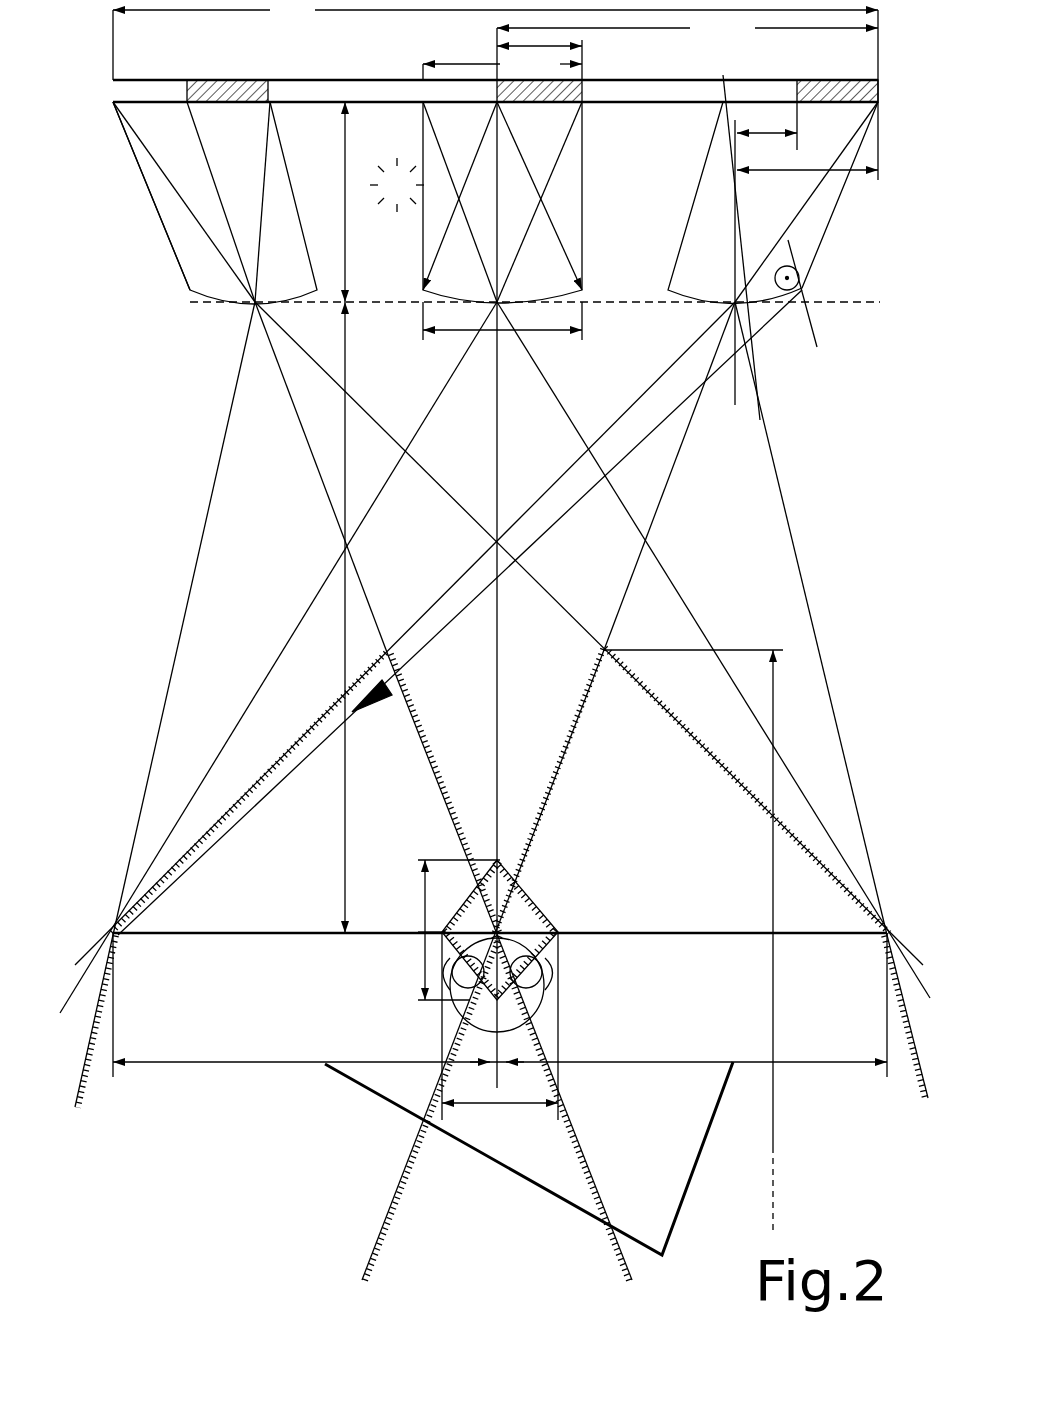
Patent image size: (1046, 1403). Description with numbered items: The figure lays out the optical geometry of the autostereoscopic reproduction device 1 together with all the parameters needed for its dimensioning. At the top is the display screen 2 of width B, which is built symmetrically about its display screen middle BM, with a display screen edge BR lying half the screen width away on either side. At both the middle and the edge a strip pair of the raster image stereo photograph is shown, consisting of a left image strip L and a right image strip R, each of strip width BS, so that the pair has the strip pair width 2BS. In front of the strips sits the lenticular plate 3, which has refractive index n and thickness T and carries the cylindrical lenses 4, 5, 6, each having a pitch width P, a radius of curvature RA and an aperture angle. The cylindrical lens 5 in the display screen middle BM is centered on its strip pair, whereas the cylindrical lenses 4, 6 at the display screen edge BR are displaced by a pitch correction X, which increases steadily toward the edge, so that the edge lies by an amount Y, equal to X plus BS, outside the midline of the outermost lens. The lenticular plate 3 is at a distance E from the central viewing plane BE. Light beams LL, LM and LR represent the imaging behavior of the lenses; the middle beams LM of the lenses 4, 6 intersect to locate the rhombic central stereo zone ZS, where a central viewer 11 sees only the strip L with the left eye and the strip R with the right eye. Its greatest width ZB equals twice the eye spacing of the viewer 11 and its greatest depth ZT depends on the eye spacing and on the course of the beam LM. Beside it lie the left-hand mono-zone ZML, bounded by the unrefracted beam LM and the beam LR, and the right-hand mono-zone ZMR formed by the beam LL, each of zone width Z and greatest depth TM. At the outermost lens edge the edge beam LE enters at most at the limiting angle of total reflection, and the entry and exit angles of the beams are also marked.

The reproduction device 1 is at (373, 100).
The display screen 2 is at (282, 90).
The lenticular plate 3 is at (316, 145).
The cylindrical lens 4 is at (190, 230).
The cylindrical lens 5 is at (570, 173).
The cylindrical lens 6 is at (773, 235).
The central viewer 11 is at (440, 1015).
The display screen width B is at (495, 90).
The strip width BS is at (558, 56).
The strip pair width 2BS is at (502, 67).
The display screen middle BM is at (480, 95).
The display screen edge BR is at (113, 80).
The image strip R is at (163, 88).
The image strip L is at (217, 90).
The pitch correction X is at (797, 128).
The edge offset Y is at (830, 168).
The radius of curvature RA is at (503, 175).
The pitch width P is at (521, 321).
The thickness T is at (255, 302).
The distance to viewing plane E is at (343, 347).
The refractive index n is at (397, 185).
The light beam LL is at (583, 441).
The middle light beam LM is at (655, 516).
The light beam LR is at (447, 583).
The outermost edge beam LE is at (433, 635).
The viewing plane BE is at (267, 935).
The greatest depth of central stereo zone ZT is at (425, 947).
The central stereo zone ZS is at (425, 1000).
The left-hand mono-zone ZML is at (352, 1155).
The greatest width of central stereo zone ZB is at (485, 1000).
The right-hand mono-zone ZMR is at (633, 1167).
The zone width Z is at (529, 1079).
The greatest depth of mono-zone TM is at (773, 1150).